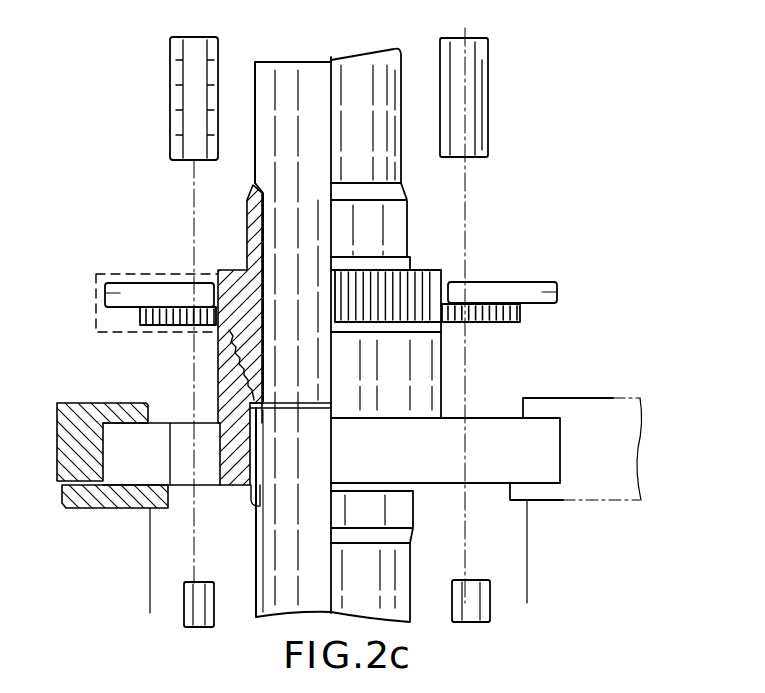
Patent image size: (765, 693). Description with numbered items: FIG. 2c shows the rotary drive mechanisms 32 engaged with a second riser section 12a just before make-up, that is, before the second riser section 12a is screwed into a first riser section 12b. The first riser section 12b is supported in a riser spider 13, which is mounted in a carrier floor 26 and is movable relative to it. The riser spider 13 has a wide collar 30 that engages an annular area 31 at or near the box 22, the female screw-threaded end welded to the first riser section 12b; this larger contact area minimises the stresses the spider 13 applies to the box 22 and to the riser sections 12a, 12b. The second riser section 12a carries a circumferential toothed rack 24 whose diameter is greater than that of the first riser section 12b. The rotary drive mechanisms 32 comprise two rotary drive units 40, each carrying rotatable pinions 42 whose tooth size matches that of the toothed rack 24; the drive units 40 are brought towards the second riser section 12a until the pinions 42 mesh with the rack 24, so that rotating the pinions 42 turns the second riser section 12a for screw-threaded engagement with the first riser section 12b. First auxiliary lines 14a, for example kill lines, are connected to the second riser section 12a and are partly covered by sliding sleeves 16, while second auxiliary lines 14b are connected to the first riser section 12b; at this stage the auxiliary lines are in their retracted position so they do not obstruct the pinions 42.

The second riser section 12a is at (402, 70).
The first riser section 12b is at (410, 572).
The riser spider 13 is at (495, 418).
The first auxiliary lines 14a is at (170, 97).
The second auxiliary lines 14b is at (184, 595).
The sliding sleeves 16 is at (172, 142).
The box 22 is at (443, 383).
The circumferential toothed rack 24 is at (441, 273).
The carrier floor 26 is at (592, 400).
The wide collar 30 is at (250, 490).
The annular area 31 is at (266, 466).
The rotary drive mechanisms 32 is at (143, 270).
The rotary drive units 40 is at (105, 297).
The pinions 42 is at (140, 316).